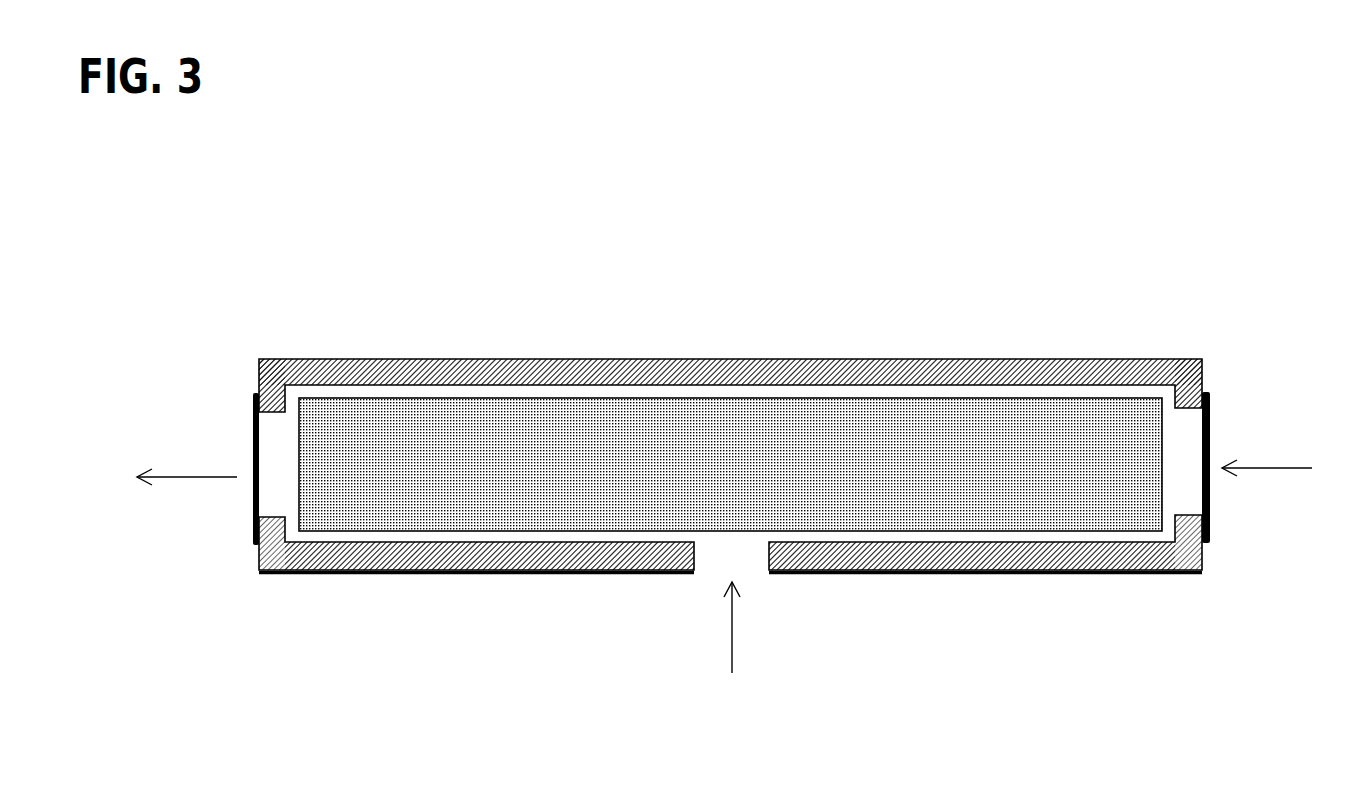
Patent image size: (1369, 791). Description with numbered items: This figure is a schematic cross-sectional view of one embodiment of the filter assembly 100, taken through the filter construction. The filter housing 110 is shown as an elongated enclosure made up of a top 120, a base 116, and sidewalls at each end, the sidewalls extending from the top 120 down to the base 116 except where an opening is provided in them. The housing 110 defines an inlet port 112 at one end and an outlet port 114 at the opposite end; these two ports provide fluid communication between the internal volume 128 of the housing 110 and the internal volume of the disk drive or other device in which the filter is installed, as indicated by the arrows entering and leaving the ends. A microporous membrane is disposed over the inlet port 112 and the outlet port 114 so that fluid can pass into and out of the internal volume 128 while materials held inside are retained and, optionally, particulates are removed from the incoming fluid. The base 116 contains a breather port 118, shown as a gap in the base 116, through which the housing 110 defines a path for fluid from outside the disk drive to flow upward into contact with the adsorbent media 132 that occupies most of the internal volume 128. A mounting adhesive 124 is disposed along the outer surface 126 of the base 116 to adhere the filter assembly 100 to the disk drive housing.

The filter assembly 100 is at (610, 254).
The filter housing 110 is at (936, 339).
The inlet port 112 is at (1220, 422).
The outlet port 114 is at (238, 433).
The base 116 is at (583, 548).
The breather port 118 is at (743, 553).
The top 120 is at (518, 358).
The mounting adhesive 124 is at (1085, 575).
The outer surface 126 is at (323, 575).
The internal volume 128 is at (393, 390).
The adsorbent media 132 is at (985, 448).